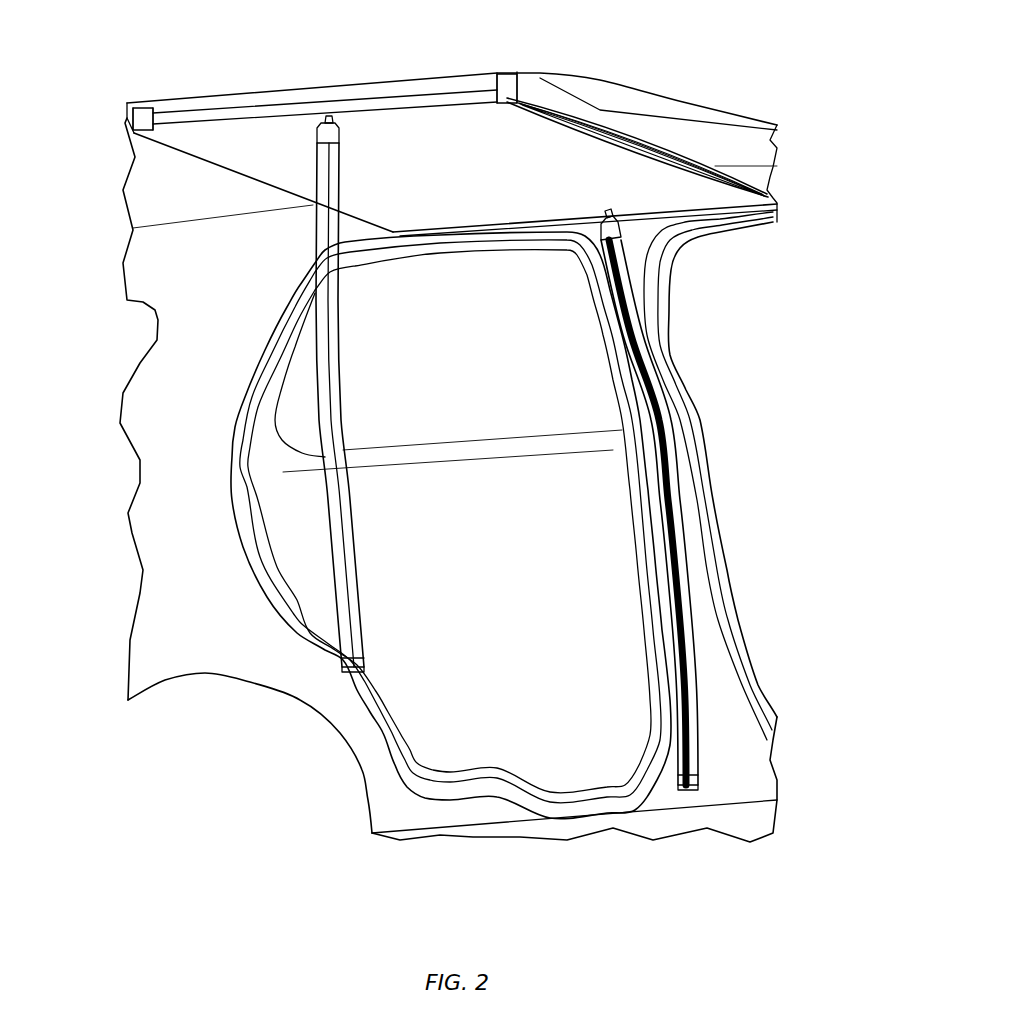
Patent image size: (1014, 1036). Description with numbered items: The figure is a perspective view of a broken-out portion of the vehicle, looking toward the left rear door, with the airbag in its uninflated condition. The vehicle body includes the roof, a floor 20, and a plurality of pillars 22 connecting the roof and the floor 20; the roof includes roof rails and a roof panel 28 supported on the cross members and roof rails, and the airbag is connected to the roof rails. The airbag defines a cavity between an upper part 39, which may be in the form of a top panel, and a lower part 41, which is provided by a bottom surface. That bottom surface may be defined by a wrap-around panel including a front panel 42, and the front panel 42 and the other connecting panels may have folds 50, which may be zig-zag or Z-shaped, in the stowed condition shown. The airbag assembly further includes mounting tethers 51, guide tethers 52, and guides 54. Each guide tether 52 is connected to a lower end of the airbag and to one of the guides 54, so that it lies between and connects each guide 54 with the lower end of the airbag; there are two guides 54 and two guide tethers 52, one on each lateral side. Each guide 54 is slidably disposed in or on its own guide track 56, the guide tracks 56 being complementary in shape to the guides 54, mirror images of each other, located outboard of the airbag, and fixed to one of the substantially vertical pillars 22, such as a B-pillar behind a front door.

The floor 20 is at (683, 818).
The pillars 22 is at (693, 420).
The roof panel 28 is at (710, 103).
The upper part 39 is at (637, 136).
The lower part 41 is at (278, 180).
The front panel 42 is at (682, 173).
The folds 50 is at (707, 163).
The mounting tethers 51 is at (133, 120).
The guide tethers 52 is at (333, 120).
The guides 54 is at (320, 140).
The guide tracks 56 is at (358, 560).